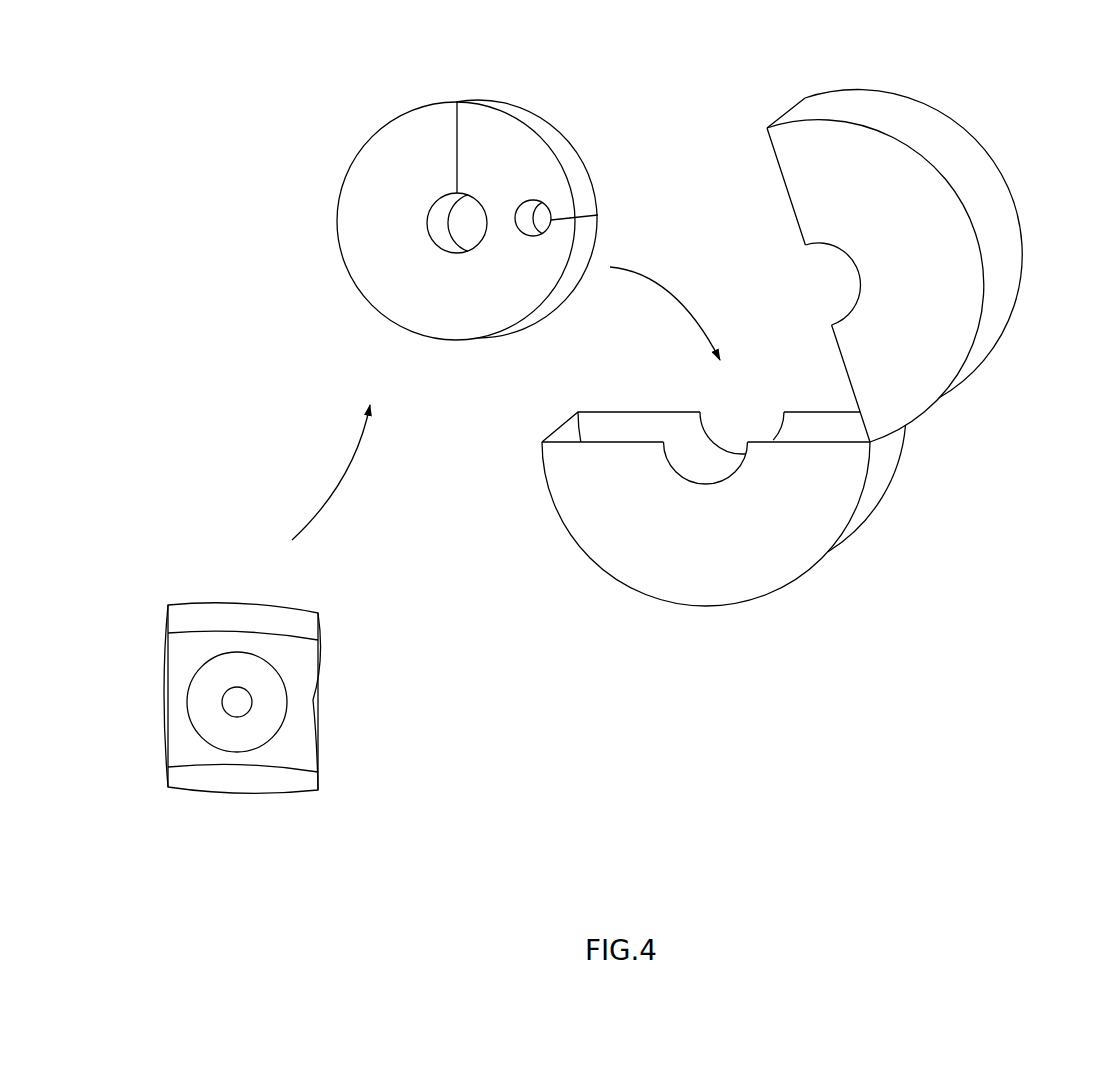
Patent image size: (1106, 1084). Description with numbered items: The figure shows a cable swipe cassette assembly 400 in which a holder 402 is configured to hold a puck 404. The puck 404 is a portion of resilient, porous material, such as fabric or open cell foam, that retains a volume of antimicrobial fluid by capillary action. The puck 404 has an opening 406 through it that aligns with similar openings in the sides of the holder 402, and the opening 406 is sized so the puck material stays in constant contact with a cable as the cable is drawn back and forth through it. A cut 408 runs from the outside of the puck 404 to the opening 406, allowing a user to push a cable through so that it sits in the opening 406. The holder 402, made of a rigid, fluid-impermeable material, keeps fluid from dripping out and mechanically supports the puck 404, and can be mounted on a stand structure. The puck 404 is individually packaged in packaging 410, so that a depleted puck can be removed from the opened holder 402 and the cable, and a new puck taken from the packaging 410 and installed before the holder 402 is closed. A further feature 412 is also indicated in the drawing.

The cable swipe cassette assembly 400 is at (1083, 70).
The holder 402 is at (888, 552).
The puck 404 is at (407, 214).
The opening 406 is at (458, 225).
The cut 408 is at (457, 150).
The packaging 410 is at (342, 713).
The aperture 412 is at (543, 213).